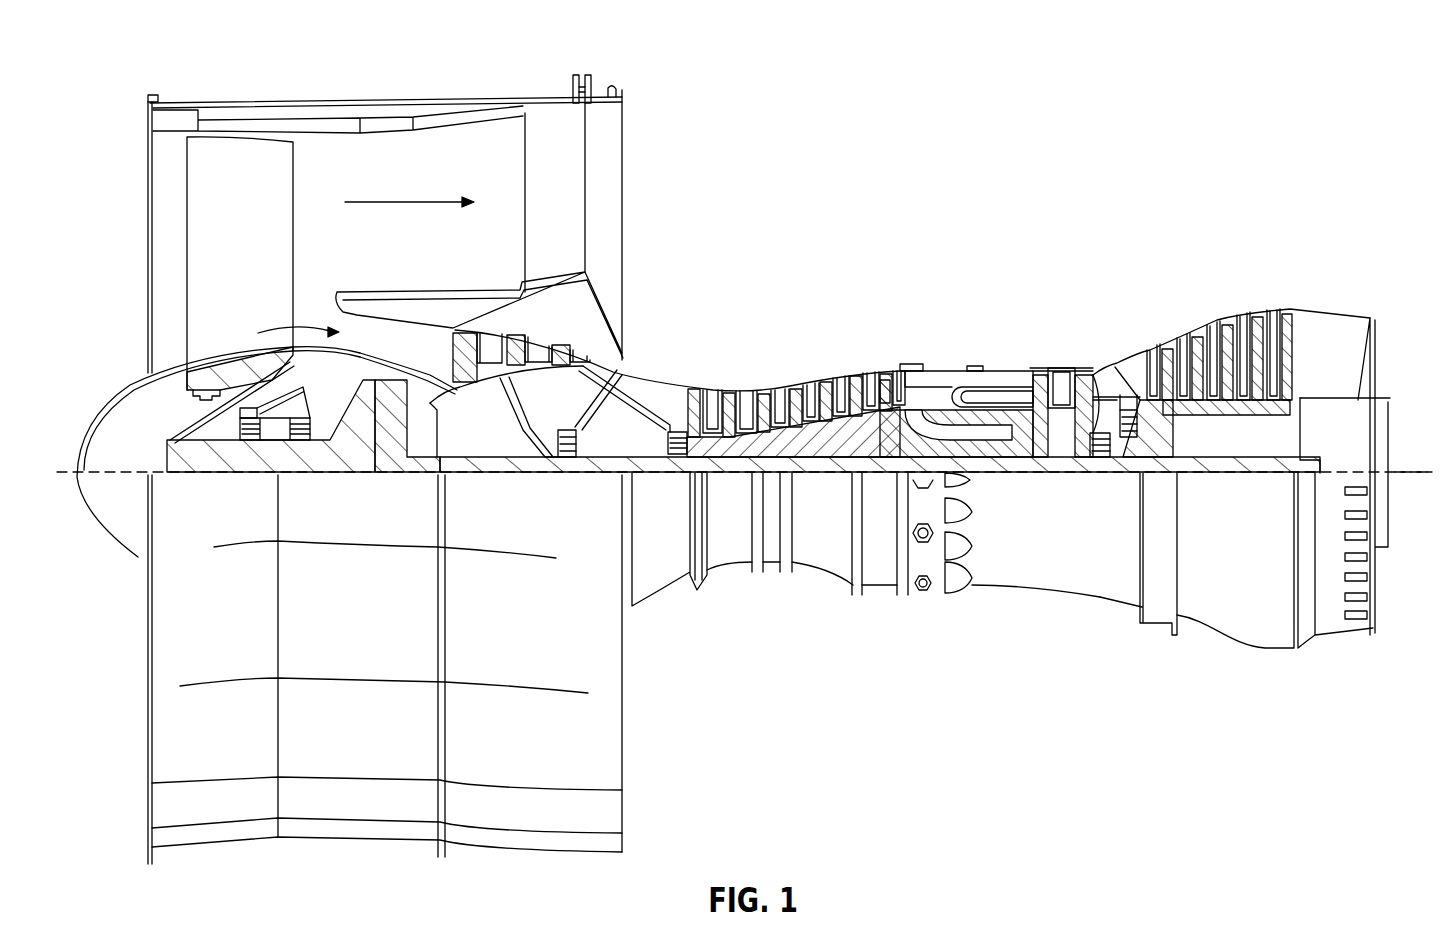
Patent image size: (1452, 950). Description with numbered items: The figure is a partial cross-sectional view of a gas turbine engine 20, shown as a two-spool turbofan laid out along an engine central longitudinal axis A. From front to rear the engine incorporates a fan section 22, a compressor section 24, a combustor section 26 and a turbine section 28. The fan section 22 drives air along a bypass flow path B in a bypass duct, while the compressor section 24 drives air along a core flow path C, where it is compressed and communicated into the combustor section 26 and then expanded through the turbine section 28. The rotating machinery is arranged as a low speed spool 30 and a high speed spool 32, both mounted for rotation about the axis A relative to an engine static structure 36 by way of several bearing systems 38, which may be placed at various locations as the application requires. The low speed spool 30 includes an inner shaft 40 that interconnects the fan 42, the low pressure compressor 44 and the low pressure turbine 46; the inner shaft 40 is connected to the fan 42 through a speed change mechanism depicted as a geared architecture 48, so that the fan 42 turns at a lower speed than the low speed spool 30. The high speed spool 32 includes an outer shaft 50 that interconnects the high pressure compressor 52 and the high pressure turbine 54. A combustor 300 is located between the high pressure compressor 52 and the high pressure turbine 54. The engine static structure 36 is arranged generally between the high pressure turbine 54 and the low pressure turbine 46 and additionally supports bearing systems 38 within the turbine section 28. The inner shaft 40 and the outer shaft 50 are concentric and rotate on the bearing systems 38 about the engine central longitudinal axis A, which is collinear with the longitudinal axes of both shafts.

The gas turbine engine 20 is at (1194, 142).
The fan section 22 is at (152, 82).
The compressor section 24 is at (811, 332).
The combustor section 26 is at (991, 309).
The turbine section 28 is at (1122, 312).
The low speed spool 30 is at (846, 474).
The high speed spool 32 is at (897, 410).
The engine static structure 36 is at (883, 591).
The bearing systems 38 is at (252, 441).
The inner shaft 40 is at (636, 468).
The fan 42 is at (237, 237).
The low pressure compressor 44 is at (537, 350).
The low pressure turbine 46 is at (1228, 332).
The geared architecture 48 is at (388, 440).
The outer shaft 50 is at (1010, 450).
The high pressure compressor 52 is at (800, 440).
The high pressure turbine 54 is at (1063, 366).
The combustor 300 is at (967, 390).
The engine central longitudinal axis A is at (1397, 472).
The bypass flow path B is at (410, 202).
The core flow path C is at (273, 330).